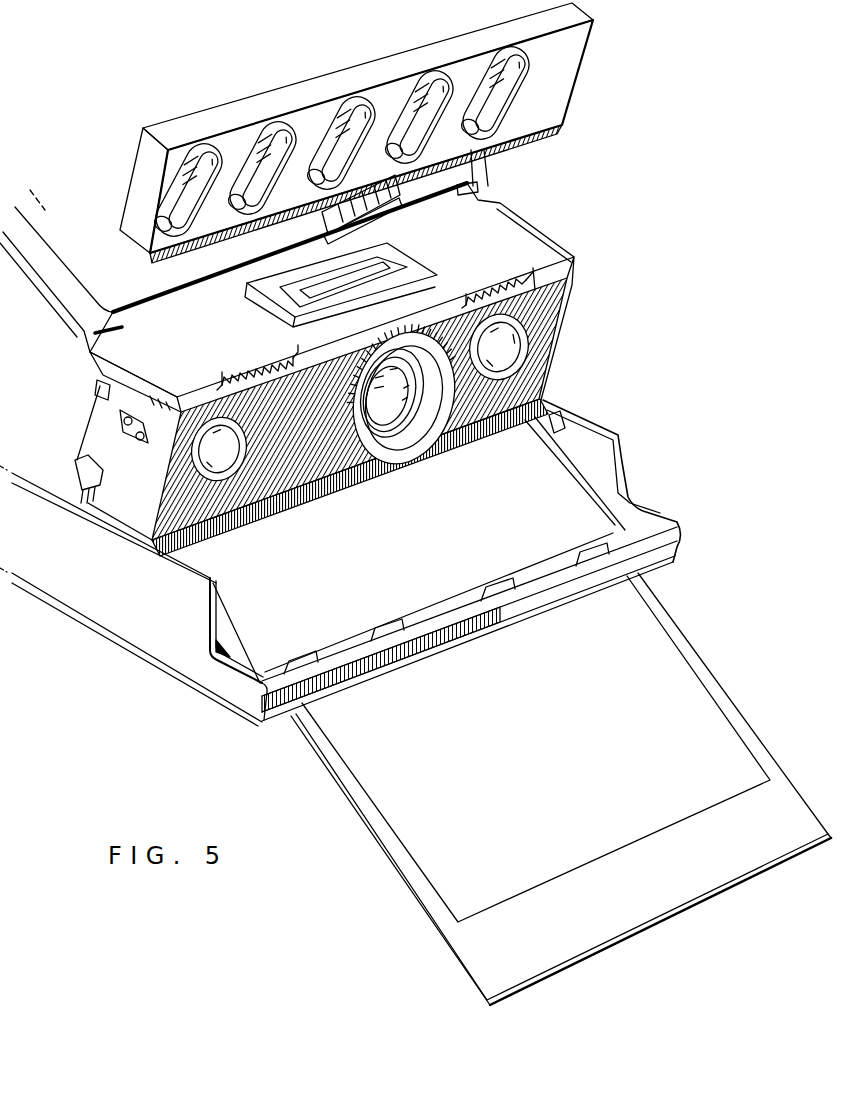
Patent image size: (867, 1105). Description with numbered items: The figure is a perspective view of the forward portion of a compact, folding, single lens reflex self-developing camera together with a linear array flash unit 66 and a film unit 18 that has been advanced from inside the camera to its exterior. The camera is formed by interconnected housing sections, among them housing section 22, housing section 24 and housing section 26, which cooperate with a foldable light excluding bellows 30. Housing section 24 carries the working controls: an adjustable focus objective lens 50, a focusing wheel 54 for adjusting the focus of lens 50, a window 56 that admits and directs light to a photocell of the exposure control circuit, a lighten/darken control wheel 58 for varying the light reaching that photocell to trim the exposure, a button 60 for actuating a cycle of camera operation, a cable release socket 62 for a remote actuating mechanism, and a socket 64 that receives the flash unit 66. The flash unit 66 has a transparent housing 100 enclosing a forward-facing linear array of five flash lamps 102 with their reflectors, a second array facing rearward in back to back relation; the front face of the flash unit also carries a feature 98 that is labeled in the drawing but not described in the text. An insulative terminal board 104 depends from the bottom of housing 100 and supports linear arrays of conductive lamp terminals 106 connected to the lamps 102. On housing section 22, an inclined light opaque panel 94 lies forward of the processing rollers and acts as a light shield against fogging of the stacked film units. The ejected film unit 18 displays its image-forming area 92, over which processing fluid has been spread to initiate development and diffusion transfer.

The film unit 18 is at (561, 789).
The housing section 22 is at (103, 590).
The housing section 24 is at (167, 327).
The housing section 26 is at (488, 182).
The light excluding bellows 30 is at (67, 399).
The objective lens 50 is at (393, 400).
The focusing wheel 54 is at (252, 365).
The window 56 is at (508, 348).
The lighten/darken control wheel 58 is at (515, 285).
The button 60 is at (234, 447).
The cable release socket 62 is at (136, 438).
The socket 64 is at (317, 290).
The flash unit 66 is at (335, 133).
The image-forming area 92 is at (666, 729).
The light opaque panel 94 is at (287, 628).
The flash bar window panel 98 is at (173, 150).
The transparent housing 100 is at (163, 210).
The flash lamps 102 is at (307, 100).
The insulative terminal board 104 is at (397, 213).
The conductive lamp terminals 106 is at (380, 220).